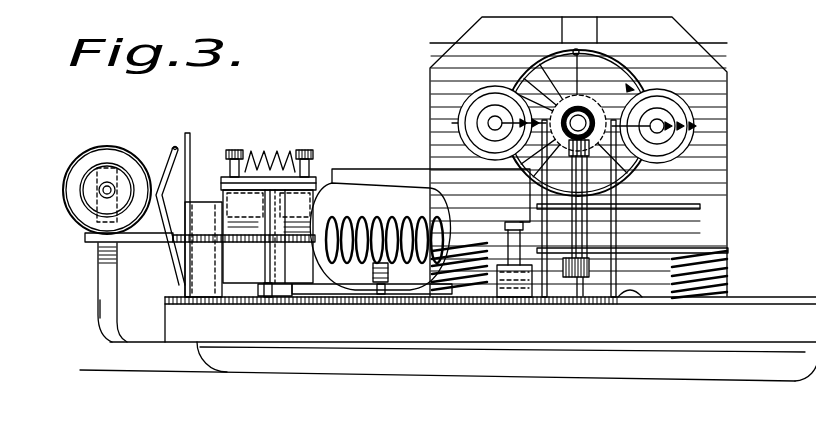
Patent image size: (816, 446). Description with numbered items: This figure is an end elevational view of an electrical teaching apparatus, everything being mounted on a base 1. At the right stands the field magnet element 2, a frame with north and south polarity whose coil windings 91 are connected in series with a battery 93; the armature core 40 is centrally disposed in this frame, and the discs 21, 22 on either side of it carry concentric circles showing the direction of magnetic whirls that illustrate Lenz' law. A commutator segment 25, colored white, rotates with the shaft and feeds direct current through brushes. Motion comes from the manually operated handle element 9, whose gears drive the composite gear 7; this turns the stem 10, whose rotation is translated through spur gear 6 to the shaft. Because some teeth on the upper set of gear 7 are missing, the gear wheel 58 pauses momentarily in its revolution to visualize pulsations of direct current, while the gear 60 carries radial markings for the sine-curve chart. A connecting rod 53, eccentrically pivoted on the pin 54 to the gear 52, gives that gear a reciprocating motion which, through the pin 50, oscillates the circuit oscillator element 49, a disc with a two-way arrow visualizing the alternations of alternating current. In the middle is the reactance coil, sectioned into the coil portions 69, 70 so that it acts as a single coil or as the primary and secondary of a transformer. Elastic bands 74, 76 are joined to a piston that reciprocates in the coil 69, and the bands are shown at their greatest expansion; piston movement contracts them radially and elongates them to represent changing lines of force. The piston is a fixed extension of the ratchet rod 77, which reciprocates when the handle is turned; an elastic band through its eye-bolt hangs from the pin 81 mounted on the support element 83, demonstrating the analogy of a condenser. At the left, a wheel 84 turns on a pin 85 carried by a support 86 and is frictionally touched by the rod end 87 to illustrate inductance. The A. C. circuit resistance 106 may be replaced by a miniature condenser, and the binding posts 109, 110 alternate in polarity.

The base 1 is at (815, 327).
The field magnet element 2 is at (673, 34).
The spur gear 6 is at (570, 303).
The gear 7 is at (600, 291).
The element (handle) 9 is at (589, 267).
The stem 10 is at (579, 222).
The disc 21 is at (477, 106).
The disc 22 is at (675, 105).
The commutator segment 25 is at (637, 172).
The armature core 40 is at (618, 183).
The circuit oscillator element 49 is at (220, 197).
The pin 50 is at (266, 266).
The gear 52 is at (340, 289).
The connecting rod 53 is at (483, 293).
The pin 54 is at (265, 296).
The gear wheel 58 is at (447, 300).
The gear 60 is at (163, 268).
The coil (reactance coil portion) 69 is at (440, 213).
The coil (reactance coil portion) 70 is at (267, 263).
The band 74 is at (370, 181).
The band 76 is at (383, 296).
The ratchet rod 77 is at (207, 226).
The pin 81 is at (175, 143).
The support element 83 is at (168, 153).
The wheel 84 is at (70, 171).
The pin 85 is at (100, 190).
The support 86 is at (107, 298).
The end of ratchet rod 87 is at (88, 242).
The coil windings 91 is at (728, 262).
The battery 93 is at (205, 287).
The A. C. circuit resistance 106 is at (265, 152).
The binding post 109 is at (312, 152).
The binding post 110 is at (240, 152).